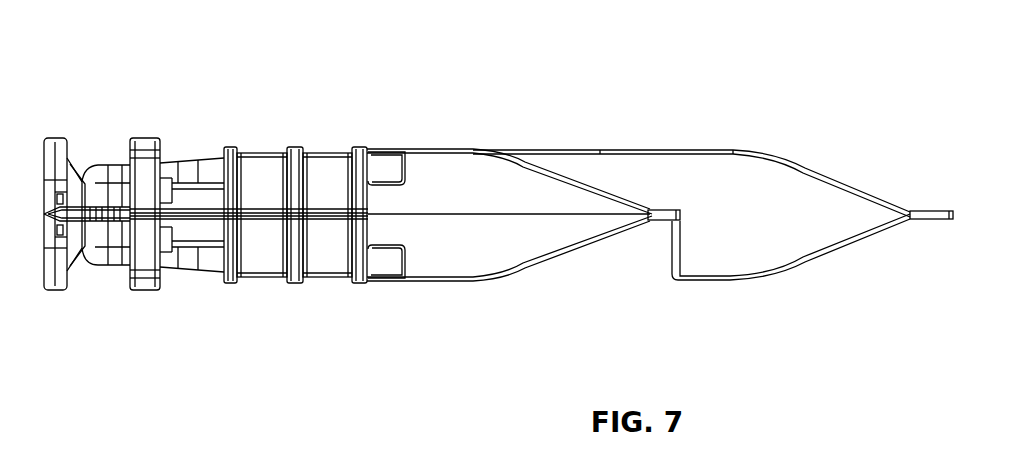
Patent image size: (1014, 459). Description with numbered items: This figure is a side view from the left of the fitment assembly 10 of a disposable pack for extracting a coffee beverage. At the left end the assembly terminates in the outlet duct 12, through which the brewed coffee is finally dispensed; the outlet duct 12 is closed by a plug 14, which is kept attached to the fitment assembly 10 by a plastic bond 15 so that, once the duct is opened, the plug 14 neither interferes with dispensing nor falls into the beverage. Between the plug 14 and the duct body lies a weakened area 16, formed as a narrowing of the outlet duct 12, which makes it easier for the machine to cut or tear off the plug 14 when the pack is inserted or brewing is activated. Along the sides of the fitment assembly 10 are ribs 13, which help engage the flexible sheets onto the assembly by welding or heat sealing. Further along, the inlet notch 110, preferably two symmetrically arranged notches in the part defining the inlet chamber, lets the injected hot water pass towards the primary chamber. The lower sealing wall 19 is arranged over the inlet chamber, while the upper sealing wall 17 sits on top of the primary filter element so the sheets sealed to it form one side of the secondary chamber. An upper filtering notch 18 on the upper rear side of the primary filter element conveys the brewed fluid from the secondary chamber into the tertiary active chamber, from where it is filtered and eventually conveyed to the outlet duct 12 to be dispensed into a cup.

The fitment assembly 10 is at (495, 198).
The outlet duct 12 is at (108, 163).
The ribs 13 is at (357, 152).
The plug 14 is at (56, 282).
The plastic bond 15 is at (80, 217).
The weakened area 16 is at (82, 181).
The upper sealing wall 17 is at (718, 170).
The upper filtering notch 18 is at (666, 245).
The lower sealing wall 19 is at (475, 169).
The inlet notch 110 is at (390, 165).